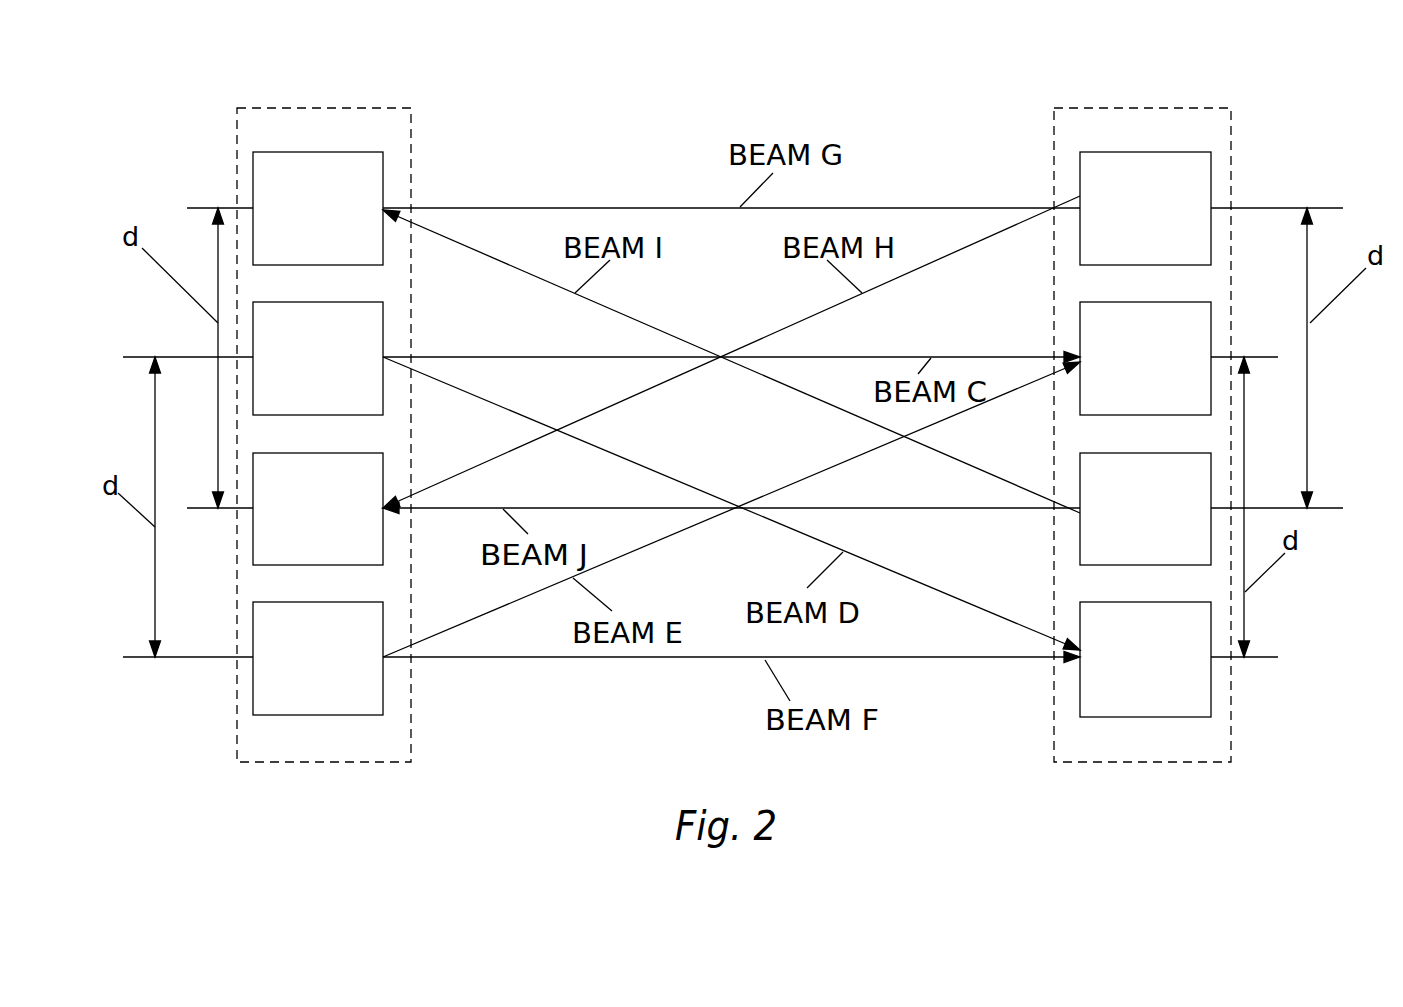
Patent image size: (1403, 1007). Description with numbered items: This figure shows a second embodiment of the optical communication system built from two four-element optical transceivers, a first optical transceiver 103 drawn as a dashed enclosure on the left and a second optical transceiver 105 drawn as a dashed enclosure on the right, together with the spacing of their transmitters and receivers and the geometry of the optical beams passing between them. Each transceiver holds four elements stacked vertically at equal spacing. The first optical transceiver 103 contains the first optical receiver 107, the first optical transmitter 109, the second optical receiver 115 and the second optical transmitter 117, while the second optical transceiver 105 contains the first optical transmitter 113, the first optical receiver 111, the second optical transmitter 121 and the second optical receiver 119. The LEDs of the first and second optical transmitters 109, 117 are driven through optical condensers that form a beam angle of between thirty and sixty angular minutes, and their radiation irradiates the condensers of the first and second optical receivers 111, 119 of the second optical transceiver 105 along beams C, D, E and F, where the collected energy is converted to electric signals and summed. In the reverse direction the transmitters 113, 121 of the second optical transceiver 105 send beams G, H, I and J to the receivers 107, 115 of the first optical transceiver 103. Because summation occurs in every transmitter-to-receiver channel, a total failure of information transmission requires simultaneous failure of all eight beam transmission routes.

The first optical transceiver 103 is at (357, 108).
The second optical transceiver 105 is at (1120, 108).
The first optical receiver 107 is at (383, 178).
The first optical transmitter 109 is at (383, 328).
The first optical receiver 111 is at (1211, 313).
The first optical transmitter 113 is at (1160, 152).
The second optical receiver 115 is at (383, 490).
The second optical transmitter 117 is at (383, 638).
The second optical receiver 119 is at (1211, 680).
The second optical transmitter 121 is at (1211, 545).